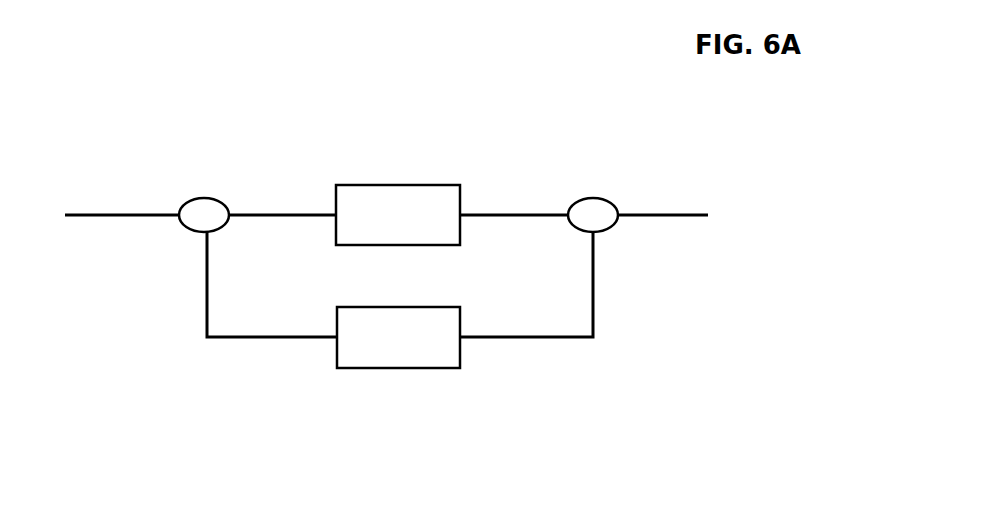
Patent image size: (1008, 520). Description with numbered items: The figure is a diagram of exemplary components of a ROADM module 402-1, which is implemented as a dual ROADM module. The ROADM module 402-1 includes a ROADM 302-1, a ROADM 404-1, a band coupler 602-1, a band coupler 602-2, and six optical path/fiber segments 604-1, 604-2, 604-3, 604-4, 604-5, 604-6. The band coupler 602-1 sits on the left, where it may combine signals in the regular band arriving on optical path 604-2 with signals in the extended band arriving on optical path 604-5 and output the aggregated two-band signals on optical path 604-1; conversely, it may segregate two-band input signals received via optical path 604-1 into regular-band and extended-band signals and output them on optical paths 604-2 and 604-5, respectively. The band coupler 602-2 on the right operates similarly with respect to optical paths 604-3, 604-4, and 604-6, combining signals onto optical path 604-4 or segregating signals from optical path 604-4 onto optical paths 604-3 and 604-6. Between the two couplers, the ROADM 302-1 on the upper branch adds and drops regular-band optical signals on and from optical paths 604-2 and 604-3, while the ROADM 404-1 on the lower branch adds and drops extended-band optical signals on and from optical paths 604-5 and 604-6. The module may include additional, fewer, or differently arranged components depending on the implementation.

The ROADM module 402-1 is at (95, 138).
The band coupler 602-1 is at (203, 197).
The band coupler 602-2 is at (590, 197).
The optical path/fiber segment 604-1 is at (123, 218).
The optical path/fiber segment 604-2 is at (302, 212).
The optical path/fiber segment 604-3 is at (498, 212).
The optical path/fiber segment 604-4 is at (692, 212).
The optical path/fiber segment 604-5 is at (277, 340).
The optical path/fiber segment 604-6 is at (567, 340).
The ROADM 302-1 is at (398, 215).
The ROADM 404-1 is at (398, 337).